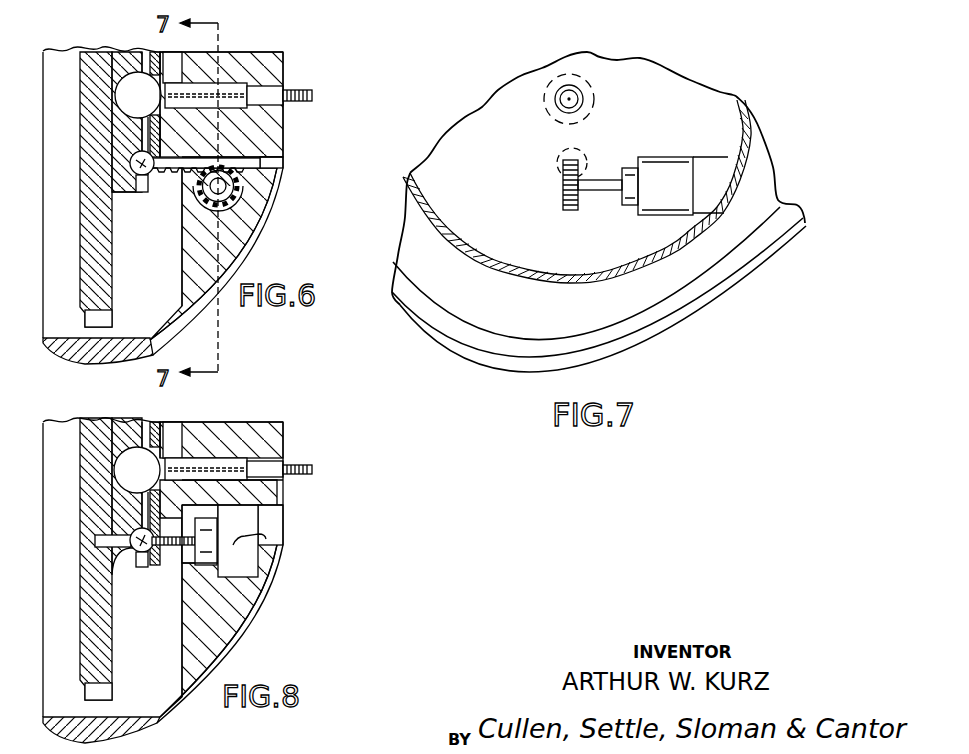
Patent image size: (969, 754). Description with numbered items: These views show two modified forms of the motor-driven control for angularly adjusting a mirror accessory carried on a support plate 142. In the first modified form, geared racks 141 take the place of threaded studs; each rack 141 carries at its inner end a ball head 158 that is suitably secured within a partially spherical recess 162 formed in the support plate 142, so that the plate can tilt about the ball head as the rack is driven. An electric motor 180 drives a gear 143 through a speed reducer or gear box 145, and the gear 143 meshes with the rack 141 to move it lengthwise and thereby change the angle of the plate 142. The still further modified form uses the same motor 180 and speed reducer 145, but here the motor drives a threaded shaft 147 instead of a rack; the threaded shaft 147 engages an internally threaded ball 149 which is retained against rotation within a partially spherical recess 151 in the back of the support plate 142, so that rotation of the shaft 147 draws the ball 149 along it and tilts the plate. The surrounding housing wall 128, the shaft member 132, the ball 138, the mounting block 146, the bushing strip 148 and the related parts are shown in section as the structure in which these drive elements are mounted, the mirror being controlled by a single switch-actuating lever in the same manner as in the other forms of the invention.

In FIG. 6, the bowl wall 128 is at (247, 247).
In FIG. 7, the bowl wall 128 is at (577, 191).
In FIG. 8, the bowl wall 128 is at (253, 614).
In FIG. 6, the feed screw shaft 132 is at (231, 96).
In FIG. 8, the feed screw shaft 132 is at (238, 469).
In FIG. 6, the ball 138 is at (139, 72).
In FIG. 7, the ball 138 is at (590, 80).
In FIG. 8, the ball 138 is at (136, 446).
In FIG. 6, the geared rack 141 is at (239, 160).
In FIG. 7, the geared rack 141 is at (558, 155).
In FIG. 6, the support plate 142 is at (103, 226).
In FIG. 8, the support plate 142 is at (103, 675).
In FIG. 6, the gear 143 is at (252, 205).
In FIG. 7, the gear 143 is at (563, 194).
In FIG. 7, the speed reducer 145 is at (629, 207).
In FIG. 8, the speed reducer 145 is at (205, 568).
In FIG. 6, the mounting block 146 is at (112, 58).
In FIG. 8, the mounting block 146 is at (118, 430).
In FIG. 8, the threaded shaft 147 is at (177, 522).
In FIG. 6, the bushing strip 148 is at (158, 64).
In FIG. 8, the bushing strip 148 is at (160, 428).
In FIG. 8, the internally threaded ball 149 is at (126, 572).
In FIG. 8, the partially spherical recess 151 is at (128, 537).
In FIG. 6, the ball head 158 is at (140, 195).
In FIG. 6, the partially spherical recess 162 is at (130, 161).
In FIG. 7, the electric motor 180 is at (669, 183).
In FIG. 8, the electric motor 180 is at (262, 561).